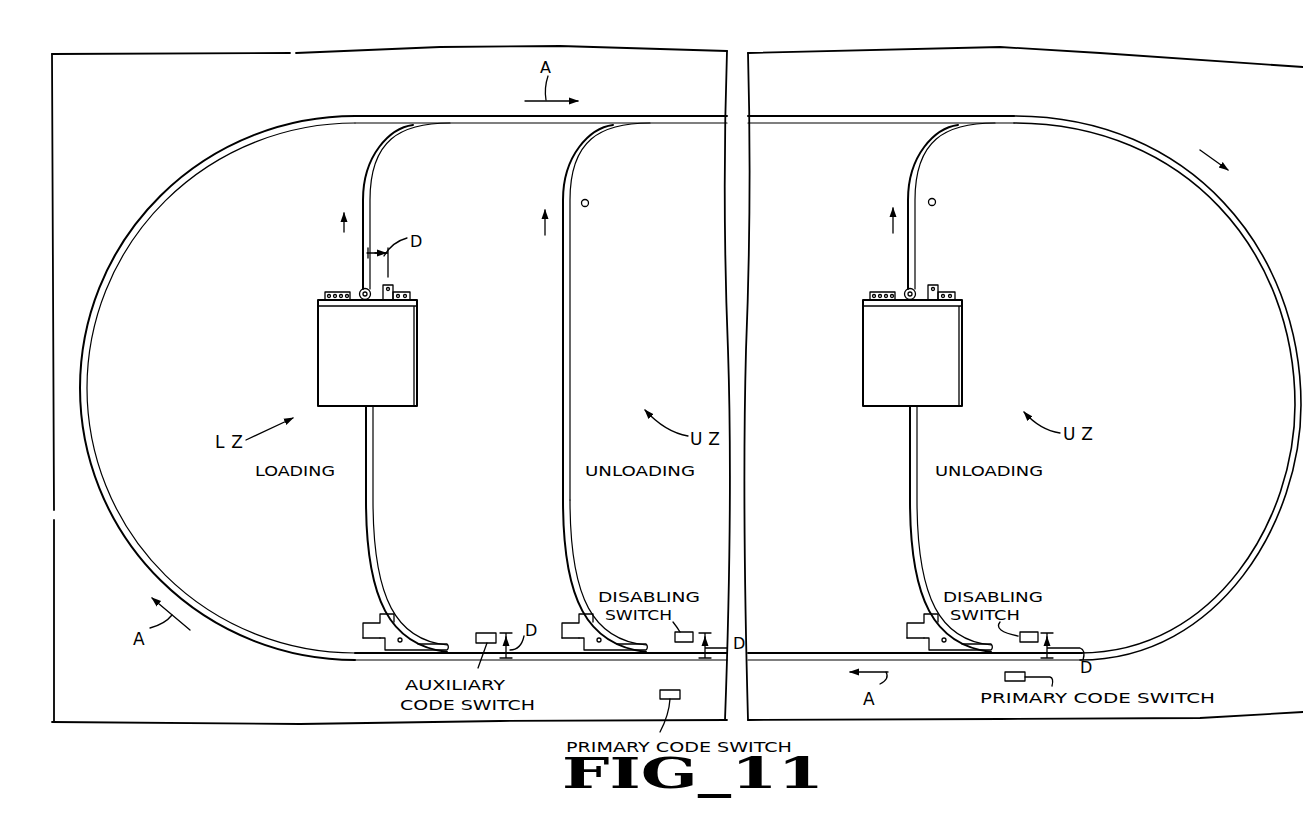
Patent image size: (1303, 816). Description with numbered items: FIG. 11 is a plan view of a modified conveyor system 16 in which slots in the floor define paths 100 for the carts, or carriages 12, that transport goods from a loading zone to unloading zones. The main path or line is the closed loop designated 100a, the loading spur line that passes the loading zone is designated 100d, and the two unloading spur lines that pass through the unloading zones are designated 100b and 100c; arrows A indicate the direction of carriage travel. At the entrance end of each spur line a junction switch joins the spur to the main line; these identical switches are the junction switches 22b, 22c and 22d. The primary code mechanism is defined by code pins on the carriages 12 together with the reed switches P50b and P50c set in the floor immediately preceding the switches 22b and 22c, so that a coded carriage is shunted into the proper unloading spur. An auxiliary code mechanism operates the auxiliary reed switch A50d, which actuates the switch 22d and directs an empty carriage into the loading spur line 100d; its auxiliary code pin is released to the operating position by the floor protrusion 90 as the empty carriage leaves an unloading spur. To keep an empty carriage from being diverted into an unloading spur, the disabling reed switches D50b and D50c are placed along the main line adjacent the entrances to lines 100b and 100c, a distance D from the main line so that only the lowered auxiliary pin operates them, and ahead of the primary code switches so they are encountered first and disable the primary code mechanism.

The paths 100 is at (216, 158).
The main path 100a is at (815, 125).
The unloading spur line 100b is at (571, 243).
The unloading spur line 100c is at (916, 250).
The loading spur line 100d is at (372, 222).
The carriage 12 is at (921, 359).
The conveyor system 16 is at (1128, 115).
The actuating member 90 is at (589, 200).
The junction switch 22d is at (362, 615).
The junction switch 22b is at (562, 613).
The junction switch 22c is at (908, 617).
The auxiliary reed switch A50d is at (473, 636).
The disabling reed switch D50b is at (675, 641).
The disabling reed switch D50c is at (1040, 630).
The primary code reed switch P50b is at (660, 694).
The primary code reed switch P50c is at (1005, 677).